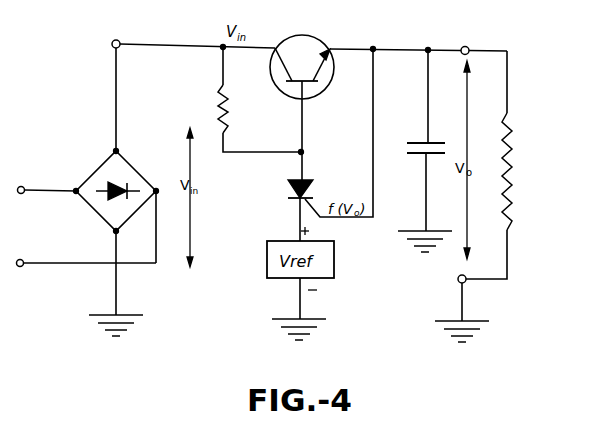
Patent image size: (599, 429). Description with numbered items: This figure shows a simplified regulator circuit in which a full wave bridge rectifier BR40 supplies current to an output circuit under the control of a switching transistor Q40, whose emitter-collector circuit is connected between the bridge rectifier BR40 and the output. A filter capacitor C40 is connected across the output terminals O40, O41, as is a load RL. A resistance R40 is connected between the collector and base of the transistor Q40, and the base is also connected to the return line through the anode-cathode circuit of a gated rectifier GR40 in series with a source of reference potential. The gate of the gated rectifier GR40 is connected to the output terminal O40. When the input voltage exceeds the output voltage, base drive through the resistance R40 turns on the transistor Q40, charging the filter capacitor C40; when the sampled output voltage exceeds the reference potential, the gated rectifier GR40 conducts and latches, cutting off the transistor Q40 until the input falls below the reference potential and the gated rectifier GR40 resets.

The full wave bridge rectifier BR40 is at (107, 189).
The resistance R40 is at (259, 99).
The switching transistor Q40 is at (311, 102).
The gated rectifier GR40 is at (281, 210).
The filter capacitor C40 is at (417, 140).
The output terminal O40 is at (478, 39).
The output terminal O41 is at (479, 298).
The load RL is at (500, 165).